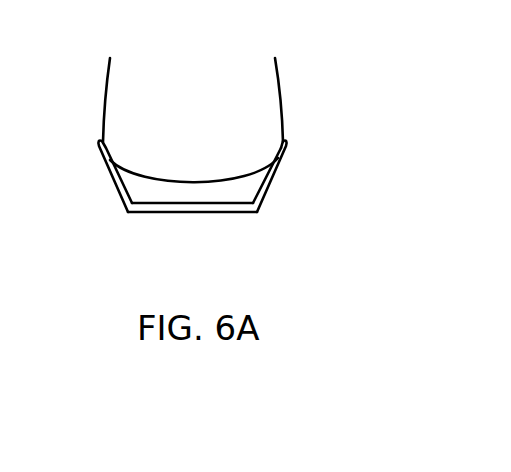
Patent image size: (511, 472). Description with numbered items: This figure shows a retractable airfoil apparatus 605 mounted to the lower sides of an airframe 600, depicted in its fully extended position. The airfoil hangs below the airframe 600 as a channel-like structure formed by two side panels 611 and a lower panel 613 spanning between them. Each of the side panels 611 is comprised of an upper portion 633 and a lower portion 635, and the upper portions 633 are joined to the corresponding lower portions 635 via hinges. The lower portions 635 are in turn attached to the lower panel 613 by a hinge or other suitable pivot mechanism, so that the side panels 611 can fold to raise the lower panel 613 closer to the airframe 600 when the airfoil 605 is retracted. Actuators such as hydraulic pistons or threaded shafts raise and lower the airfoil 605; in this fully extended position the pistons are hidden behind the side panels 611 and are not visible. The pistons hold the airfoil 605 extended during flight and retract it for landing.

The airframe 600 is at (213, 128).
The retractable airfoil apparatus 605 is at (298, 254).
The side panels 611 is at (108, 201).
The lower panel 613 is at (223, 206).
The upper portion 633 is at (280, 168).
The lower portion 635 is at (263, 198).